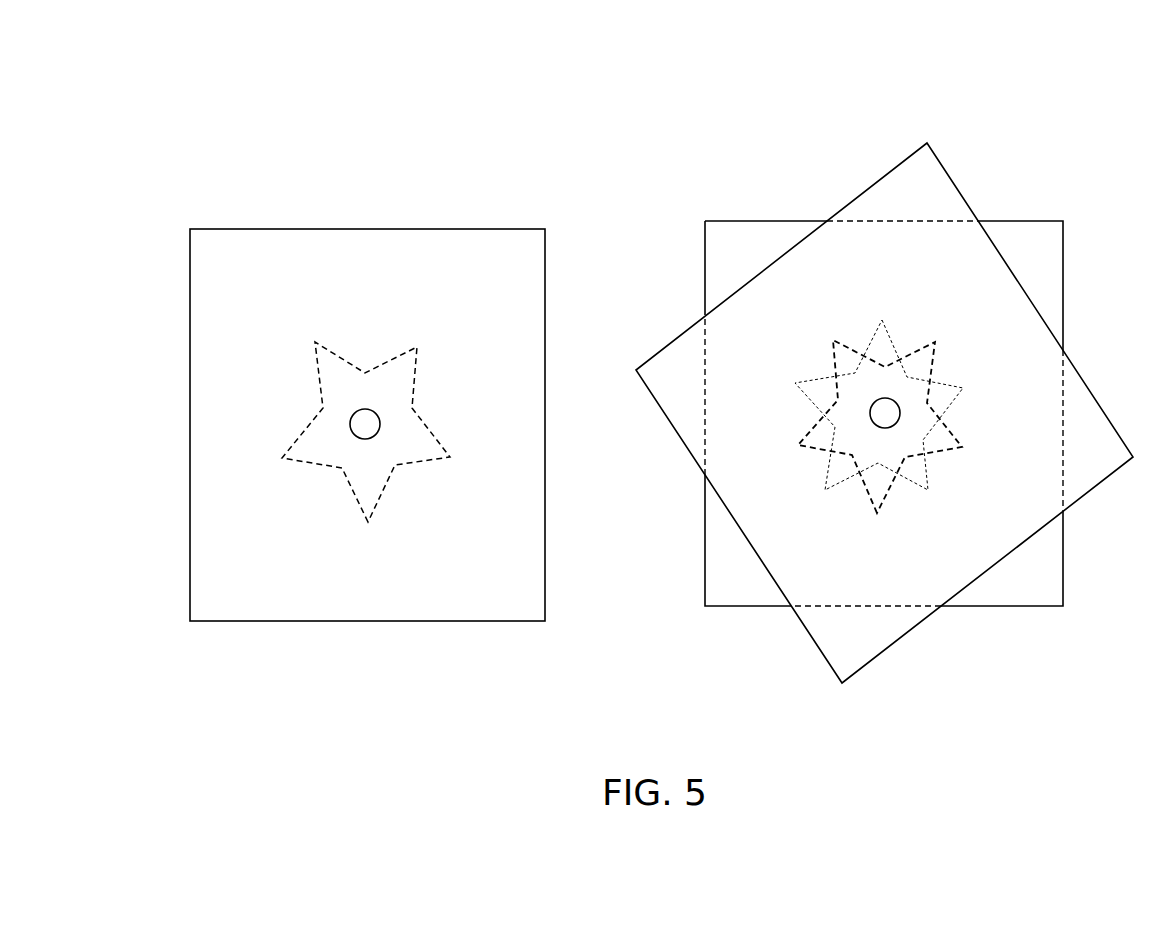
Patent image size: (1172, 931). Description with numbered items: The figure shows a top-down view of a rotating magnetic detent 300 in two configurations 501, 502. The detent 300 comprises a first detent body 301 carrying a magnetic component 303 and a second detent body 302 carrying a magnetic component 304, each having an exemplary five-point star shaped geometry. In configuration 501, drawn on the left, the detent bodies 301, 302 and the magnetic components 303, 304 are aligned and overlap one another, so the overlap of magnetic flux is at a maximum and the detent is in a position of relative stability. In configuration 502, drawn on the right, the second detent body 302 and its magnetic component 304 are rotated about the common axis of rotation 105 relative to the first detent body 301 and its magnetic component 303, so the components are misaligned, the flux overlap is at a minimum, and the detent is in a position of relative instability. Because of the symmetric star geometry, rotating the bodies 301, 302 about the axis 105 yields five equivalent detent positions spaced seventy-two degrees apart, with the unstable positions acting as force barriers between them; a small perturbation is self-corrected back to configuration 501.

The magnetic detent 300 is at (459, 84).
The configuration of relative stability 501 is at (246, 174).
The configuration of relative instability 502 is at (1017, 160).
The first detent body 301 is at (661, 422).
The second detent body 302 is at (348, 587).
The magnetic component 303 is at (622, 344).
The magnetic component 304 is at (337, 367).
The axis of rotation 105 is at (365, 423).